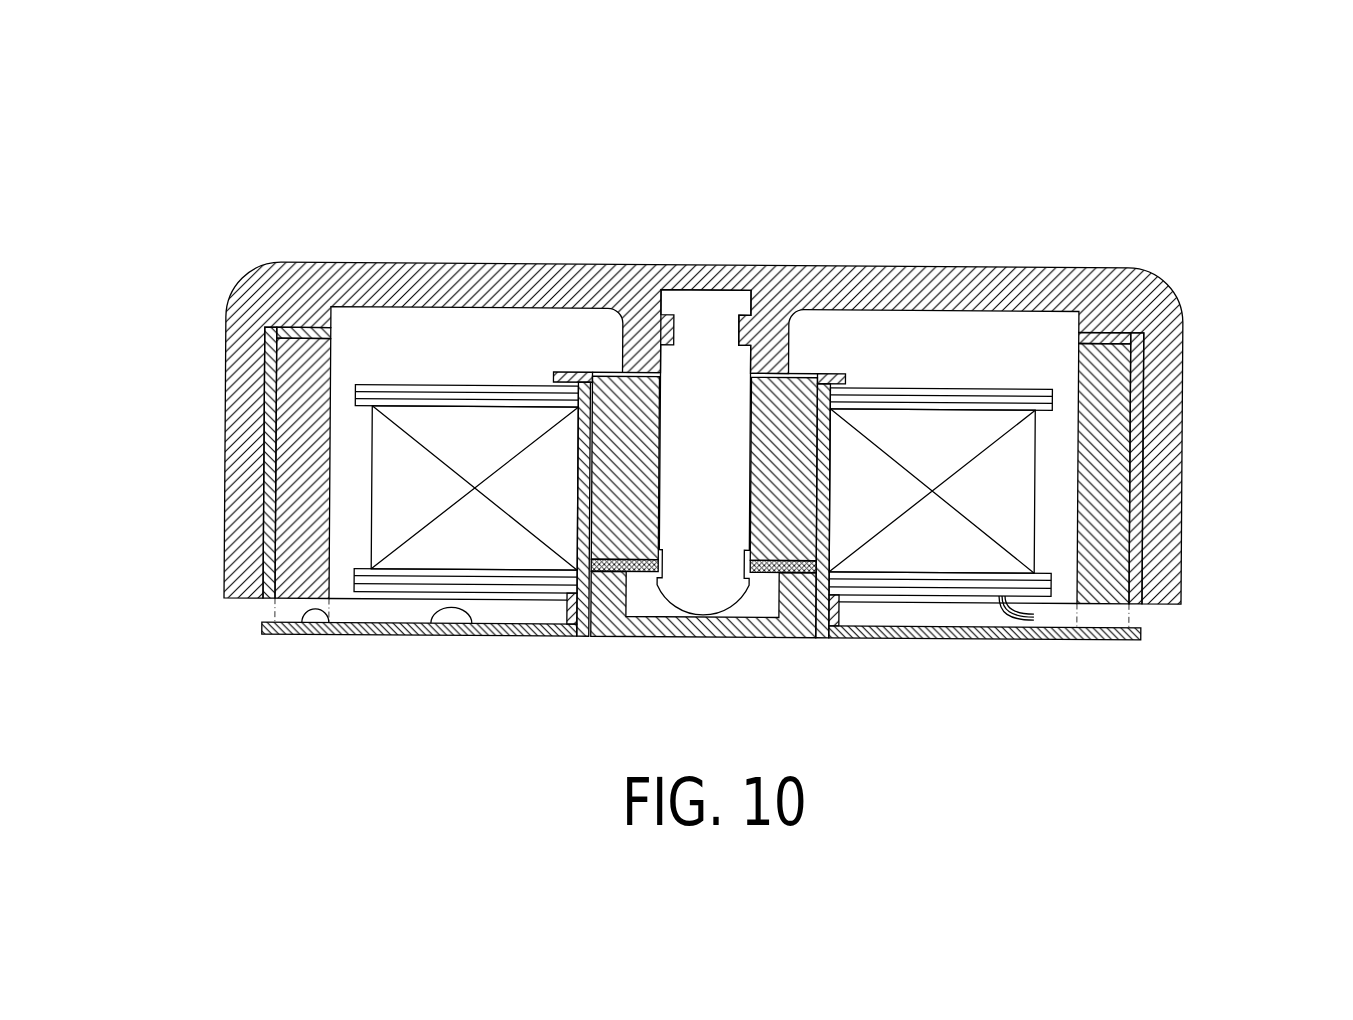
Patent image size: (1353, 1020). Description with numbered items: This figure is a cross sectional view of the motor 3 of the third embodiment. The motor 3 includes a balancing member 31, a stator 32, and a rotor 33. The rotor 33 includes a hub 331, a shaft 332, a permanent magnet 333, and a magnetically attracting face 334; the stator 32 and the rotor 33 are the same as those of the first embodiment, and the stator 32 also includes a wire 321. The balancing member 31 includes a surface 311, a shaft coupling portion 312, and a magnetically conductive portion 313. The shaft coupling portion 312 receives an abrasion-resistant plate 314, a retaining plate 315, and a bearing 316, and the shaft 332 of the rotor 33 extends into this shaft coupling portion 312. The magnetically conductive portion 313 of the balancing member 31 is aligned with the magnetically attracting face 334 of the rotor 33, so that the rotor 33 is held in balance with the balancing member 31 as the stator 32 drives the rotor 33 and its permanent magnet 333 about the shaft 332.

The motor 3 is at (728, 422).
The balancing member 31 is at (669, 466).
The surface 311 is at (472, 633).
The shaft coupling portion 312 is at (568, 380).
The magnetically conductive portion 313 is at (342, 632).
The abrasion-resistant plate 314 is at (793, 640).
The retaining plate 315 is at (640, 575).
The bearing 316 is at (608, 410).
The stator 32 is at (711, 450).
The wire 321 is at (1015, 640).
The rotor 33 is at (728, 385).
The hub 331 is at (1182, 412).
The shaft 332 is at (708, 380).
The permanent magnet 333 is at (303, 362).
The magnetically attracting face 334 is at (292, 598).